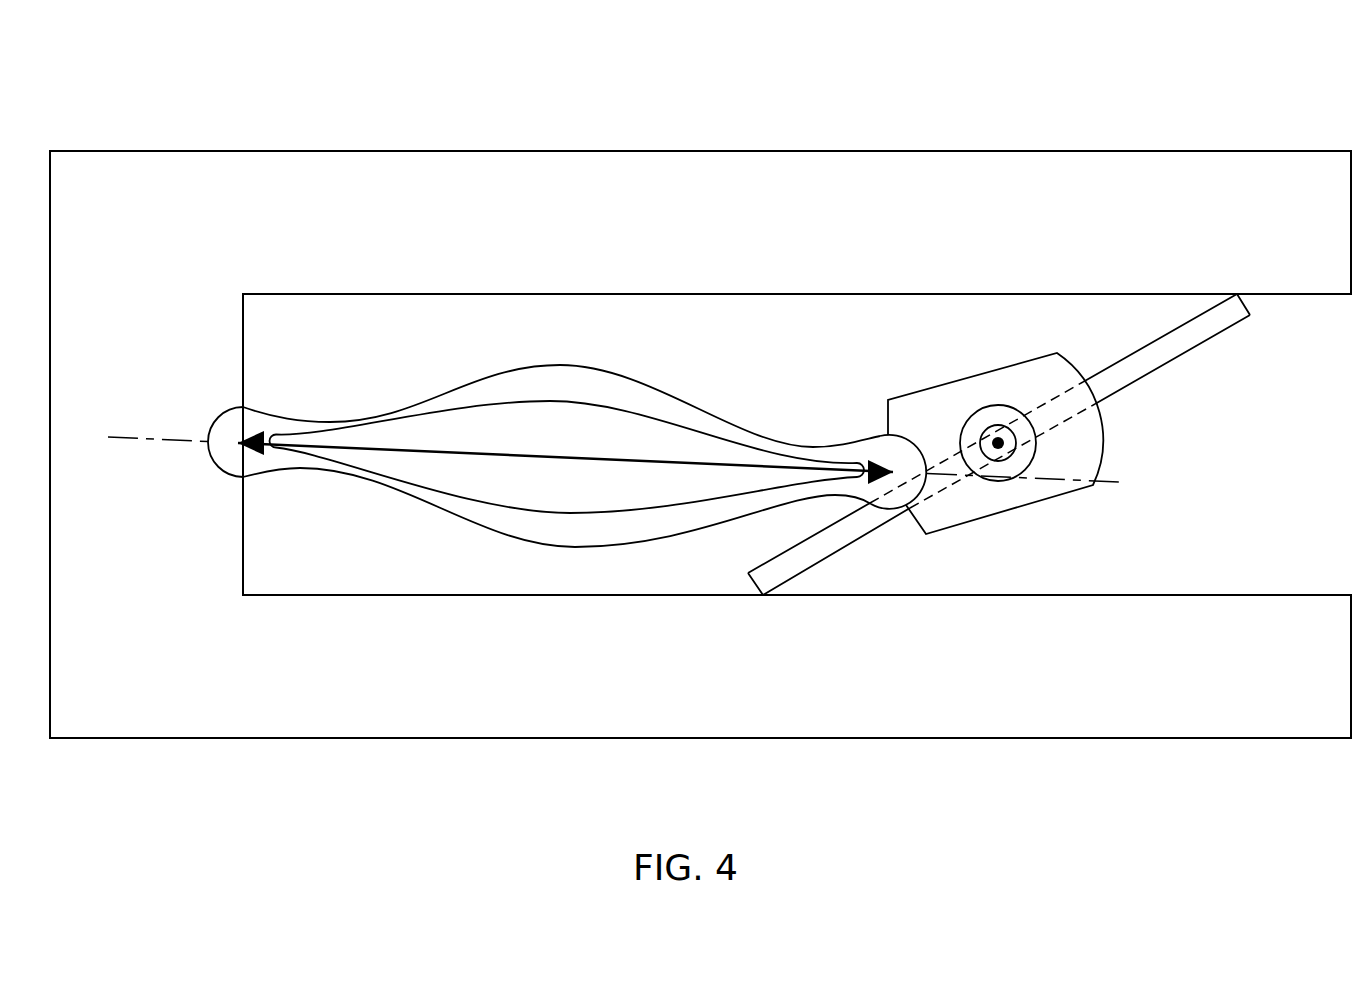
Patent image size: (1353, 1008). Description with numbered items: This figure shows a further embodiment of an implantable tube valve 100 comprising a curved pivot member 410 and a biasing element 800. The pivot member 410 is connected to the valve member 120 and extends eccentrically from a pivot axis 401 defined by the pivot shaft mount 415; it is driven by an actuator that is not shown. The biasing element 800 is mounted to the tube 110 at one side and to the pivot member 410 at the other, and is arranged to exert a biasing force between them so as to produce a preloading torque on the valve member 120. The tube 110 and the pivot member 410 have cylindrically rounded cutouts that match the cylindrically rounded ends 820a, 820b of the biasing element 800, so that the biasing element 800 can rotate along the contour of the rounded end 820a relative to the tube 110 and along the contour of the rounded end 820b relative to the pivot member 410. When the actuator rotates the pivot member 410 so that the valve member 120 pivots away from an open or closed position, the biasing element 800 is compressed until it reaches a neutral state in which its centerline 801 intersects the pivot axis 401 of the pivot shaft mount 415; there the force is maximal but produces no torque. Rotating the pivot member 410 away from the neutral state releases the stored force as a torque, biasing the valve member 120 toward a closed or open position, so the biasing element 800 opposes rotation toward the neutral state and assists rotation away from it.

The apparatus 100 is at (198, 133).
The tube 110 is at (450, 707).
The valve member 120 is at (1178, 342).
The pivot axis 401 is at (1007, 450).
The curved pivot member 410 is at (913, 395).
The pivot shaft mount 415 is at (1003, 422).
The biasing element 800 is at (596, 455).
The centerline 801 is at (133, 433).
The cylindrically rounded end 820a is at (222, 485).
The cylindrically rounded end 820b is at (932, 505).